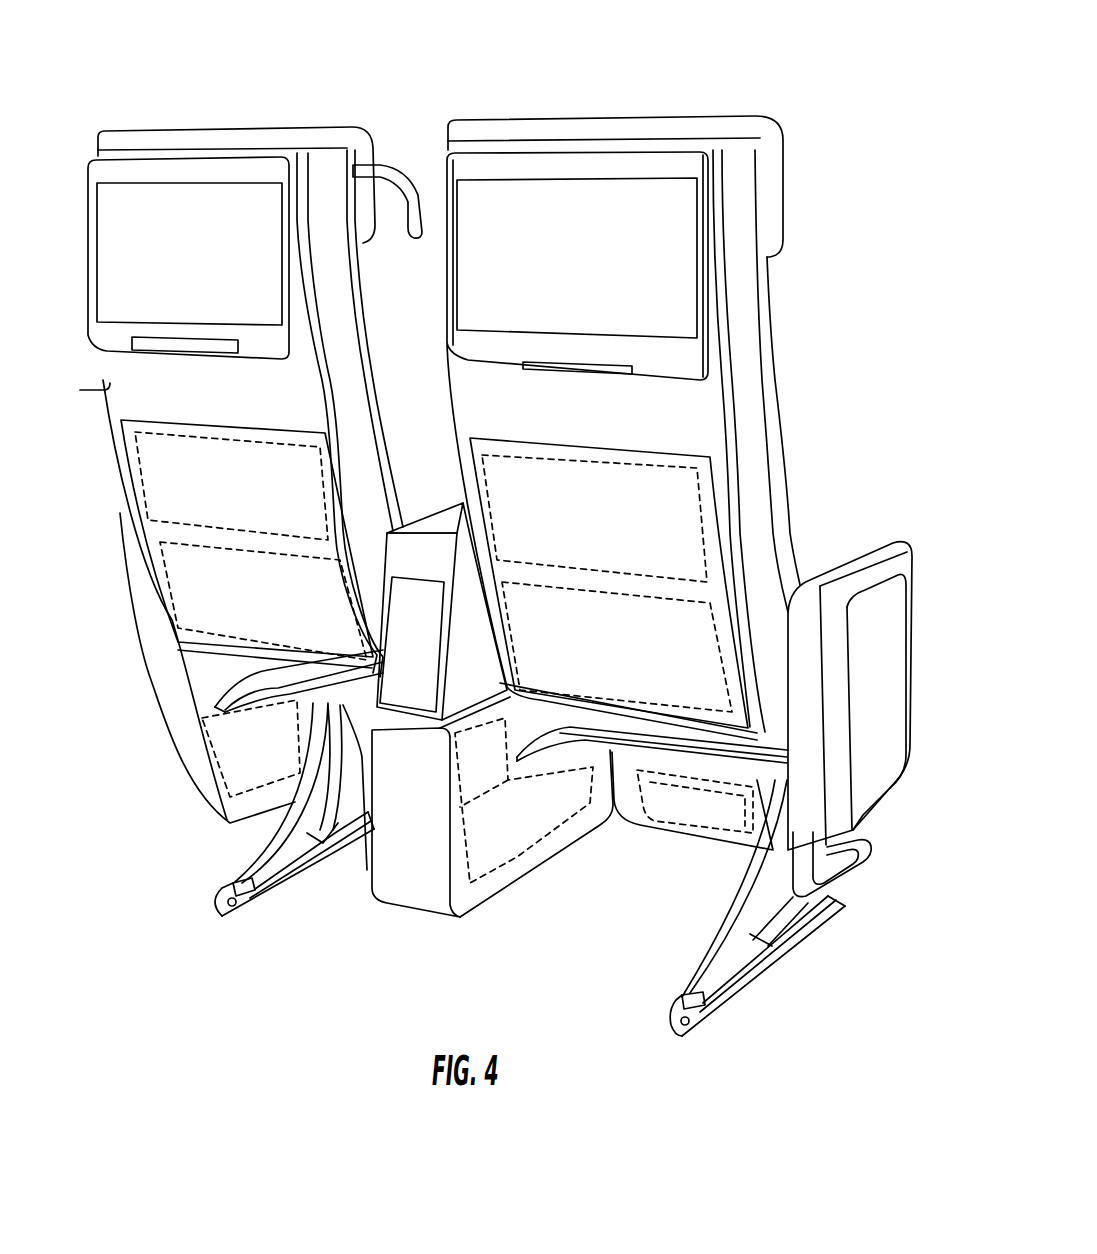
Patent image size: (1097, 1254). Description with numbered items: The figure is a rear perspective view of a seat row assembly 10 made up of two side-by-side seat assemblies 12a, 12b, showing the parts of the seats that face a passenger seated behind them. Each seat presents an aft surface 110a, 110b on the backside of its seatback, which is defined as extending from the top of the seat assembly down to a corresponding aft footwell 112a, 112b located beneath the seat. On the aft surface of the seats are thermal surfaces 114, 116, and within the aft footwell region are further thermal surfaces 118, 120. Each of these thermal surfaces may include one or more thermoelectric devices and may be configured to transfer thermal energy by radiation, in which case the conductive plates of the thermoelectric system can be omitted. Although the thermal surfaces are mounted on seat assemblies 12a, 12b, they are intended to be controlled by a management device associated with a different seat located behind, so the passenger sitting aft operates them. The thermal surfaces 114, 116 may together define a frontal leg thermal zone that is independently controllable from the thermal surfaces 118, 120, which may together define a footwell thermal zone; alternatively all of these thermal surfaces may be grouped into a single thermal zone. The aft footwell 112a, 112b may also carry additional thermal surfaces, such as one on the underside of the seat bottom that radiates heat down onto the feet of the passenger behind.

The seat row assembly 10 is at (795, 92).
The seat assembly 12a is at (603, 114).
The seat assembly 12b is at (215, 120).
The aft surface 110a is at (707, 422).
The aft surface 110b is at (121, 398).
The aft footwell 112a is at (695, 912).
The aft footwell 112b is at (200, 872).
The thermal surface 114 is at (668, 546).
The thermal surface 116 is at (708, 666).
The thermal surface 118 is at (500, 852).
The thermal surface 120 is at (700, 810).